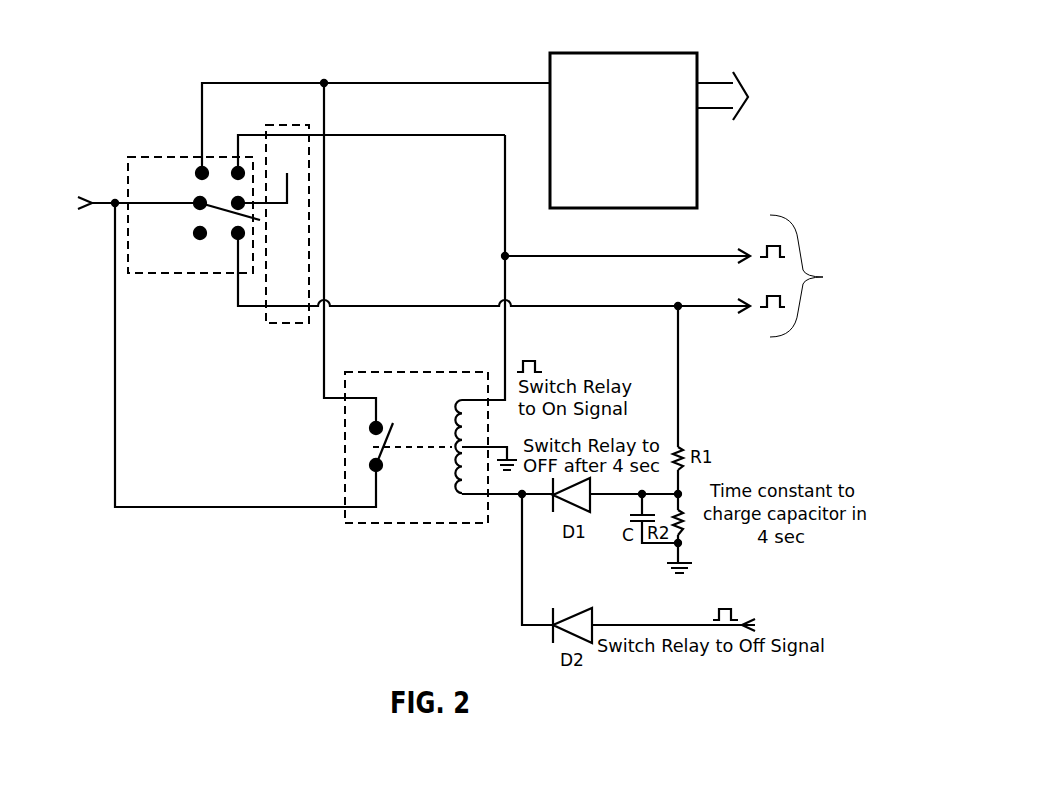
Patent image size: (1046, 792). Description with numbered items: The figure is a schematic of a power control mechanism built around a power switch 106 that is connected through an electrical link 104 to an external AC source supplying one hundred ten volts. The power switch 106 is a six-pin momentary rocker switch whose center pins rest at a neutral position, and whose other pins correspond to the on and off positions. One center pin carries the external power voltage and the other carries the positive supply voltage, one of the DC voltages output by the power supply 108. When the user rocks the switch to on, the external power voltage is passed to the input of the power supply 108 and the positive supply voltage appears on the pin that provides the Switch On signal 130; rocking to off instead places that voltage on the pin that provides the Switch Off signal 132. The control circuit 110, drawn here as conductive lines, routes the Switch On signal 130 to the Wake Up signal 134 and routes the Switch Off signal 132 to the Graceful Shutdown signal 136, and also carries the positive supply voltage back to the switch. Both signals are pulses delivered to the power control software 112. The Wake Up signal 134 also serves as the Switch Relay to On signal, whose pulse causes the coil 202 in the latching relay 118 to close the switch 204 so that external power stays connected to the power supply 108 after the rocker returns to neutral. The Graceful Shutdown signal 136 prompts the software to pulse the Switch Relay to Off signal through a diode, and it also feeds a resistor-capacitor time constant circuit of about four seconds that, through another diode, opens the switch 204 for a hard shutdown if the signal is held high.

The electrical link 104 is at (95, 208).
The power switch 106 is at (152, 157).
The power supply 108 is at (623, 52).
The control circuit 110 is at (288, 125).
The power control software 112 is at (841, 276).
The latching relay 118 is at (350, 525).
The Switch On signal 130 is at (243, 132).
The Switch Off signal 132 is at (252, 307).
The Wake Up signal 134 is at (525, 253).
The Graceful Shutdown signal 136 is at (530, 310).
The coil 202 is at (462, 473).
The switch 204 is at (377, 472).